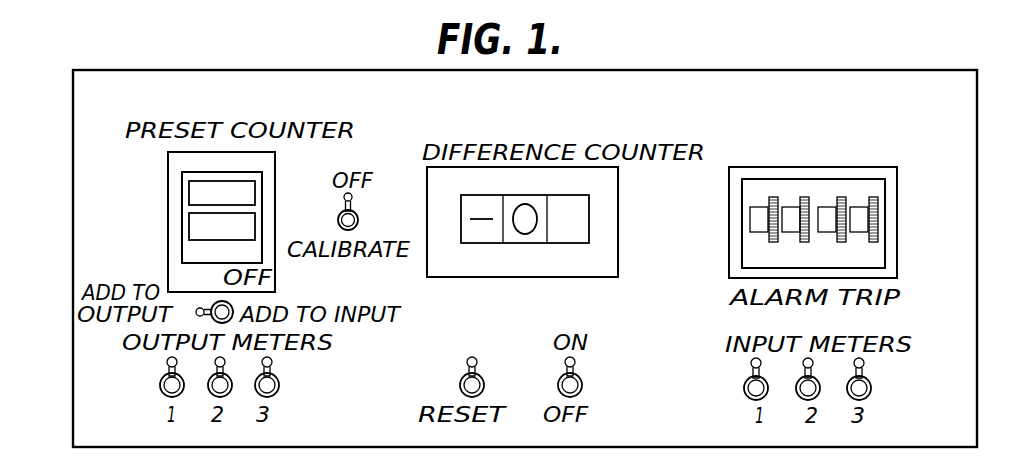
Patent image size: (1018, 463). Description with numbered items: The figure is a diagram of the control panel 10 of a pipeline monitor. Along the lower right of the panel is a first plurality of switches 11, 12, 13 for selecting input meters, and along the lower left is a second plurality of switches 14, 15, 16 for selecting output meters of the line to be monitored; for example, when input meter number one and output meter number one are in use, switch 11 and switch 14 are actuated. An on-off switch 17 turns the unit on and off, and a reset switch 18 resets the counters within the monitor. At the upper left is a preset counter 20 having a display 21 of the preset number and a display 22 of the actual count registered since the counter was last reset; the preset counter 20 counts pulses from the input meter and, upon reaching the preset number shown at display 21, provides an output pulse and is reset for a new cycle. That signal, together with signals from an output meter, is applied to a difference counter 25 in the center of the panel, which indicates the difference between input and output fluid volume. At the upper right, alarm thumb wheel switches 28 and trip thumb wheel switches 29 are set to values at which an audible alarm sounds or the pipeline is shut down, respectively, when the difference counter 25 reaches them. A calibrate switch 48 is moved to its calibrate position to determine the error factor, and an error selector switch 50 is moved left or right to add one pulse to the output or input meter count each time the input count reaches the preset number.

The control panel 10 is at (945, 191).
The input meter selector switch 11 is at (762, 364).
The input meter selector switch 12 is at (814, 364).
The input meter selector switch 13 is at (866, 364).
The output meter selector switch 14 is at (167, 363).
The output meter selector switch 15 is at (215, 363).
The output meter selector switch 16 is at (262, 363).
The on-off switch 17 is at (577, 367).
The reset switch 18 is at (466, 366).
The preset counter 20 is at (217, 222).
The display of preset number 21 is at (248, 193).
The display of actual count 22 is at (257, 225).
The difference counter 25 is at (618, 208).
The alarm thumb wheel switches 28 is at (790, 198).
The trip thumb wheel switches 29 is at (858, 198).
The calibrate switch 48 is at (356, 207).
The error selector switch 50 is at (240, 289).